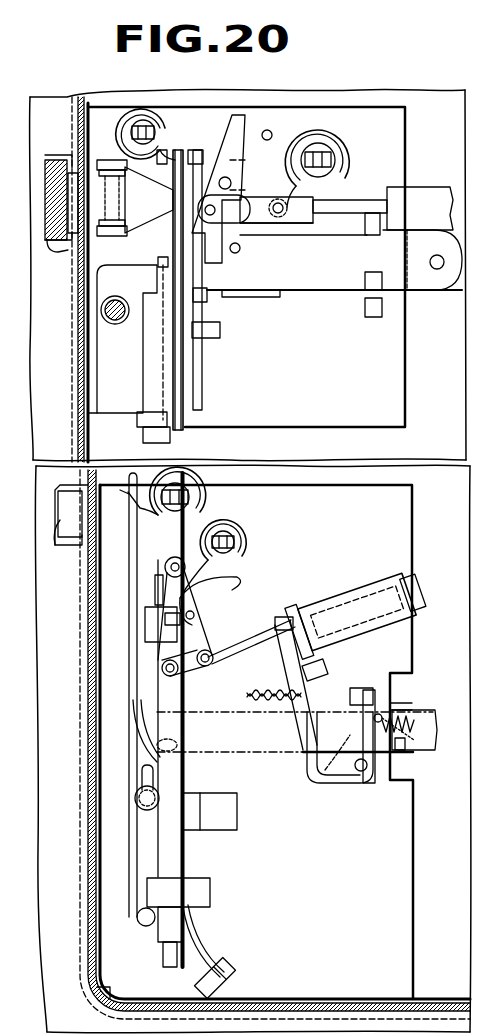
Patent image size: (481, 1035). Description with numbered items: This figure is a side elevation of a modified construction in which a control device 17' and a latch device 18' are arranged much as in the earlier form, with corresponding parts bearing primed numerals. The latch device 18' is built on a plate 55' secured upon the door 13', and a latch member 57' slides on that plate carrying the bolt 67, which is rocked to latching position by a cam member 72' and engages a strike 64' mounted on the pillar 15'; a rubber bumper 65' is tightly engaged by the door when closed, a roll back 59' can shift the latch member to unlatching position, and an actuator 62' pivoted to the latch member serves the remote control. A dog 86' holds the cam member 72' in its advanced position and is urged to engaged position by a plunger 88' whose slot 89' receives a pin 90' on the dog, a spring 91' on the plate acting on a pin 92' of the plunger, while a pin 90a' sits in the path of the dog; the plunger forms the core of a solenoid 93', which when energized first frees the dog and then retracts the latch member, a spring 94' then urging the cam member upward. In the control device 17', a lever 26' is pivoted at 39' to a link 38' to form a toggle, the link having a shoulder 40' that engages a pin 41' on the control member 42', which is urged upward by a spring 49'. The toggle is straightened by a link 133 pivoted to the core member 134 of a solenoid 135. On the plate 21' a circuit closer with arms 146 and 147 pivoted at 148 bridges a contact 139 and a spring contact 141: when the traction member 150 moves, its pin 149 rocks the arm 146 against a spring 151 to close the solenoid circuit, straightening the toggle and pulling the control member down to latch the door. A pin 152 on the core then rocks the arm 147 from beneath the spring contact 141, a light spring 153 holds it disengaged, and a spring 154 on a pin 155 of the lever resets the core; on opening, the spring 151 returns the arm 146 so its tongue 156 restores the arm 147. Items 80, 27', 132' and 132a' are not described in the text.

The pillar 15' is at (45, 88).
The door 13' is at (432, 75).
The plate 55' is at (419, 120).
The bolt 67 is at (43, 202).
The strike 64' is at (54, 261).
The spring 94' is at (136, 134).
The dog 86' is at (228, 187).
The pin 132' is at (285, 129).
The spring 91' is at (326, 168).
The plunger 88' is at (313, 204).
The solenoid 93' is at (420, 200).
The pin 90' is at (230, 200).
The pin 92' is at (275, 197).
The slot 89' is at (310, 227).
The pin 90a' is at (251, 260).
The latch member 57' is at (334, 294).
The actuator 62' is at (422, 276).
The latch device 18' is at (422, 402).
The cam member 72' is at (204, 290).
The control member 42' is at (177, 421).
The lever 80 is at (132, 273).
The roll back 59' is at (115, 328).
The bumper 65' is at (65, 531).
The spring 49' is at (174, 491).
The coil spring 27' is at (203, 540).
The spring 154 is at (237, 577).
The pin 155 is at (194, 613).
The lever 26' is at (189, 610).
The link 133 is at (198, 672).
The pivot 39' is at (134, 683).
The core member 134 is at (247, 648).
The pin 152 is at (287, 605).
The solenoid 135 is at (363, 590).
The contact 141 is at (313, 675).
The spring 153 is at (270, 690).
The arm 147 is at (307, 732).
The tongue 156 is at (333, 780).
The pivot 148 is at (368, 782).
The contact 139 is at (364, 689).
The pin 149 is at (393, 717).
The arm 146 is at (370, 730).
The traction member 150 is at (430, 723).
The spring 151 is at (400, 753).
The pin 132a' is at (295, 732).
The plate 21' is at (427, 804).
The control device 17' is at (425, 858).
The link 38' is at (192, 720).
The pin 41' is at (140, 729).
The shoulder 40' is at (195, 952).